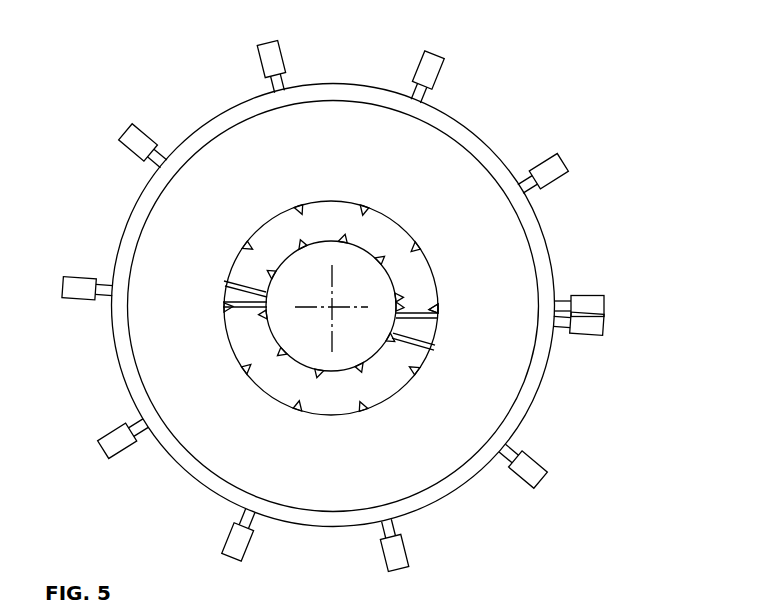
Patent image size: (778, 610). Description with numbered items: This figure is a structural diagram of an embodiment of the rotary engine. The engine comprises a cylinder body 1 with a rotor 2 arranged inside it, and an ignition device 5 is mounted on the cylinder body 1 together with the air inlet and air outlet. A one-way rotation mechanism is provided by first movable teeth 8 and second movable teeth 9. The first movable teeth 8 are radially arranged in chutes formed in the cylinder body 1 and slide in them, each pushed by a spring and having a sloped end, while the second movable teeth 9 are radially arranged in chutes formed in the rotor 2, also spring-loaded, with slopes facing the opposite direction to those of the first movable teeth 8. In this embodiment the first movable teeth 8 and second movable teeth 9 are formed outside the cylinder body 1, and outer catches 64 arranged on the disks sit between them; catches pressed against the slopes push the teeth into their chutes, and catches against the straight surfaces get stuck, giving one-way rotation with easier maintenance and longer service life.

The cylinder body 1 is at (118, 252).
The rotor 2 is at (329, 265).
The ignition device 5 is at (589, 322).
The first movable teeth 8 is at (344, 204).
The second movable teeth 9 is at (383, 252).
The outer catches 64 is at (241, 272).